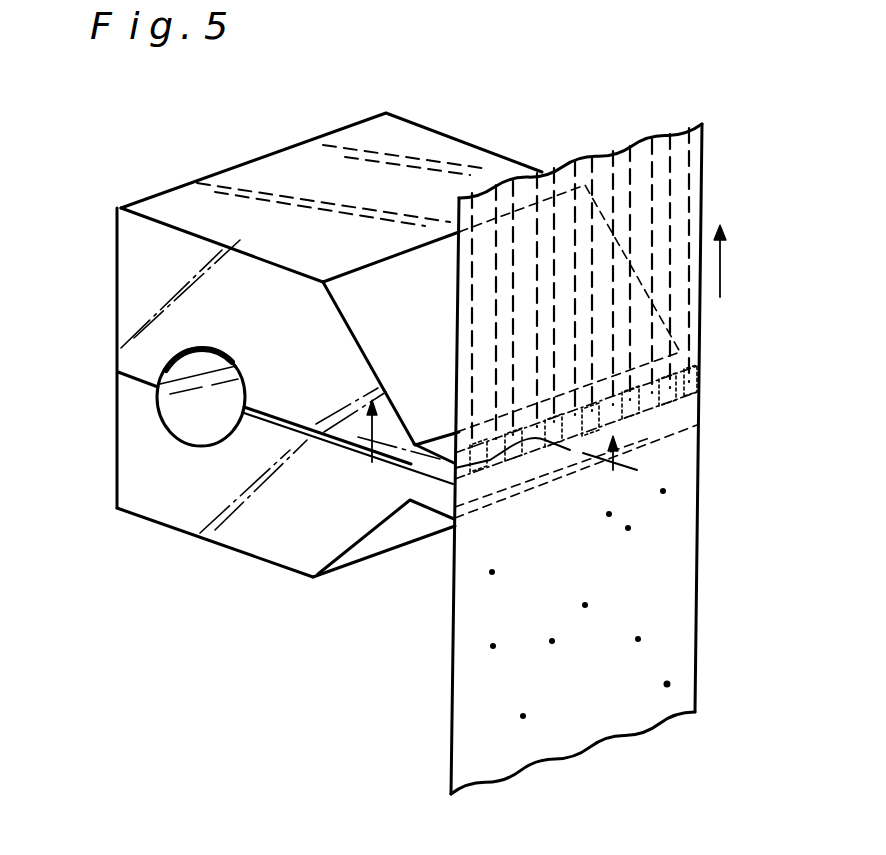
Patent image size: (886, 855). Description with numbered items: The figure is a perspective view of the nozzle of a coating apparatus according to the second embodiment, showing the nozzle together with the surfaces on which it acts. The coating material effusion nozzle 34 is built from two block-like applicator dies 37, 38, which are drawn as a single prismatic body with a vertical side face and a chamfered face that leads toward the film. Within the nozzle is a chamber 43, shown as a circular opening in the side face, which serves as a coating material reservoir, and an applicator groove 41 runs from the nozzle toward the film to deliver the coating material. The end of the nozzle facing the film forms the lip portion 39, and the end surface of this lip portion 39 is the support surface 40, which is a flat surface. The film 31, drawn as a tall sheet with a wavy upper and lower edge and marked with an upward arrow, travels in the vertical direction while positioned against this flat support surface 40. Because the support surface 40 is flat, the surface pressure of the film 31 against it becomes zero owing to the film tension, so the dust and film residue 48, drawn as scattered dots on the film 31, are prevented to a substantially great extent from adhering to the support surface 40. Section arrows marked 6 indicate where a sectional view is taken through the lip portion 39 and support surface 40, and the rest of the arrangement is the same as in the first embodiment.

The film 31 is at (697, 153).
The coating material effusion nozzle 34 is at (258, 159).
The block-like applicator die 37 is at (130, 280).
The block-like applicator die 38 is at (137, 500).
The lip portion 39 is at (437, 468).
The support surface 40 is at (467, 520).
The applicator groove 41 is at (530, 463).
The chamber 43 is at (177, 437).
The dust and film residue 48 is at (667, 684).
The section line 6- 6 is at (502, 447).